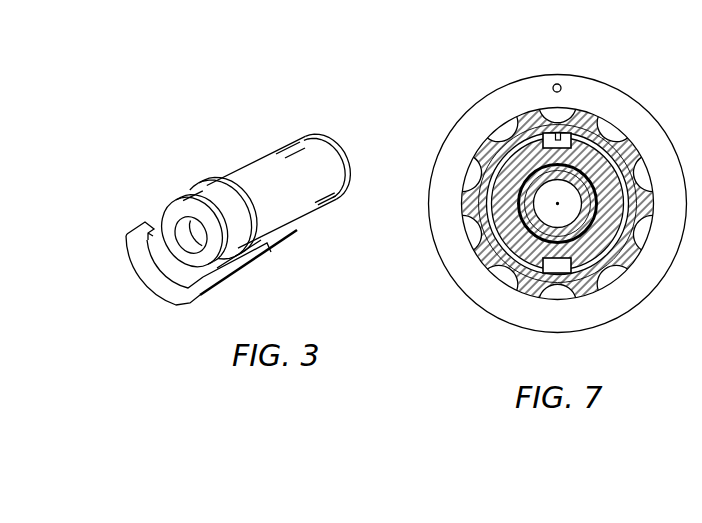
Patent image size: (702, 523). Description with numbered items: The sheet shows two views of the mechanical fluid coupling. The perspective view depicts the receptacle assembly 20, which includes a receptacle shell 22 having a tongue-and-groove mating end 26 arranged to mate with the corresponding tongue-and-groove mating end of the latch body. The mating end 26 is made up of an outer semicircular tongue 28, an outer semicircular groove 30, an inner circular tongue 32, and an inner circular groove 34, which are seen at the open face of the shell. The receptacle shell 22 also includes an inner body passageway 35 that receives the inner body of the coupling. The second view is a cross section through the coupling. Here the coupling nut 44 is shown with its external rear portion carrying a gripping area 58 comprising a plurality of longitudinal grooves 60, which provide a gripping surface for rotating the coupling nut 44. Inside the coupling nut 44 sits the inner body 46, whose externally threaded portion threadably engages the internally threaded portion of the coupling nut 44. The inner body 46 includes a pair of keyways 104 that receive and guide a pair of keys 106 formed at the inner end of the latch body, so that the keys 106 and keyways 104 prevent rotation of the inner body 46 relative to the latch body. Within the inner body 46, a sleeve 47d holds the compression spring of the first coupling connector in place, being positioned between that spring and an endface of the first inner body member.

In FIG. 3, the receptacle assembly 20 is at (251, 152).
In FIG. 3, the receptacle shell 22 is at (227, 172).
In FIG. 3, the tongue-and-groove mating end 26 is at (163, 209).
In FIG. 3, the outer semicircular tongue 28 is at (150, 256).
In FIG. 3, the outer semicircular groove 30 is at (158, 224).
In FIG. 3, the inner circular tongue 32 is at (240, 236).
In FIG. 3, the inner circular groove 34 is at (228, 240).
In FIG. 3, the inner body passageway 35 is at (232, 266).
In FIG. 7, the coupling nut 44 is at (518, 138).
In FIG. 7, the inner body 46 is at (628, 187).
In FIG. 7, the sleeve 47d is at (497, 224).
In FIG. 7, the gripping area 58 is at (492, 133).
In FIG. 7, the longitudinal grooves 60 is at (483, 162).
In FIG. 7, the keyway 104 is at (590, 170).
In FIG. 7, the key 106 is at (560, 133).